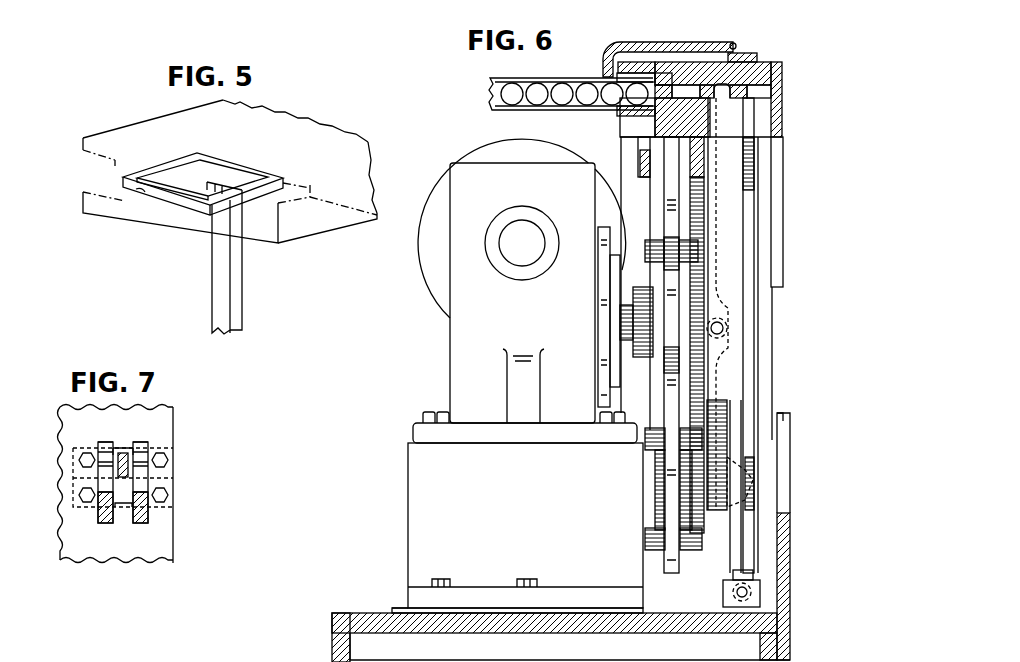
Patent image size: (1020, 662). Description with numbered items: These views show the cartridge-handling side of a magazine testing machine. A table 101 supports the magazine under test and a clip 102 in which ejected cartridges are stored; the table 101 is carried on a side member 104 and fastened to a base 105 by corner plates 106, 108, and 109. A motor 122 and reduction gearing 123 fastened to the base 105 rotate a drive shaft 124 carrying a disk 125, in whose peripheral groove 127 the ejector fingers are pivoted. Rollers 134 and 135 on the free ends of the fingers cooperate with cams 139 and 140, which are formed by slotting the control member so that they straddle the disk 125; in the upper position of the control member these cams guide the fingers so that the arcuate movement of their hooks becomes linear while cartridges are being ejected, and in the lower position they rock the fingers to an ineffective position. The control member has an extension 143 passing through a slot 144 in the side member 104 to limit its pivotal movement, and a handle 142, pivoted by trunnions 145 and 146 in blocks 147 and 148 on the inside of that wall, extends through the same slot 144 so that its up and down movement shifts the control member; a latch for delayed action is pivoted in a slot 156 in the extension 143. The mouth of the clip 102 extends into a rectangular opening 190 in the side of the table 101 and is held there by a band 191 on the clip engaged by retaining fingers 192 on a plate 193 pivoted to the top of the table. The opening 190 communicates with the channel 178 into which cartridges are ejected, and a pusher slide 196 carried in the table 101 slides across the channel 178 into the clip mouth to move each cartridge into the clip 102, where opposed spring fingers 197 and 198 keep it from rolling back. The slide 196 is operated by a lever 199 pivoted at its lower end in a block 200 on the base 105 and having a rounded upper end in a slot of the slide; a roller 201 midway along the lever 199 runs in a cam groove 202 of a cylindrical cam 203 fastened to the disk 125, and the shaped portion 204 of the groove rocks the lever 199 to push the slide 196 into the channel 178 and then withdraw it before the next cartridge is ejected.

In FIG. 5, the table 101 is at (317, 233).
In FIG. 6, the table 101 is at (787, 547).
In FIG. 6, the clip 102 is at (523, 108).
In FIG. 7, the side member 104 is at (163, 553).
In FIG. 6, the base 105 is at (382, 617).
In FIG. 6, the corner plate 106 is at (777, 103).
In FIG. 6, the corner plate 108 is at (778, 177).
In FIG. 6, the corner plate 109 is at (778, 397).
In FIG. 6, the motor 122 is at (485, 150).
In FIG. 6, the reduction gearing 123 is at (445, 327).
In FIG. 6, the drive shaft 124 is at (623, 312).
In FIG. 6, the disk 125 is at (673, 390).
In FIG. 6, the peripheral groove 127 is at (667, 218).
In FIG. 6, the roller 134 is at (688, 547).
In FIG. 6, the roller 135 is at (648, 537).
In FIG. 6, the cam 139 is at (700, 133).
In FIG. 6, the cam 140 is at (641, 173).
In FIG. 7, the handle 142 is at (100, 517).
In FIG. 7, the extension 143 is at (147, 448).
In FIG. 7, the slot 144 is at (127, 505).
In FIG. 7, the trunnion 145 is at (73, 467).
In FIG. 7, the trunnion 146 is at (165, 467).
In FIG. 7, the block 147 is at (80, 507).
In FIG. 7, the block 148 is at (167, 507).
In FIG. 7, the slot 156 is at (127, 453).
In FIG. 5, the channel 178 is at (140, 193).
In FIG. 6, the channel 178 is at (660, 117).
In FIG. 5, the rectangular opening 190 is at (97, 187).
In FIG. 6, the rectangular opening 190 is at (677, 87).
In FIG. 6, the band 191 is at (633, 68).
In FIG. 6, the retaining fingers 192 is at (607, 77).
In FIG. 6, the plate 193 is at (630, 32).
In FIG. 5, the pusher slide 196 is at (190, 197).
In FIG. 6, the pusher slide 196 is at (762, 63).
In FIG. 6, the spring finger 197 is at (623, 120).
In FIG. 6, the spring finger 198 is at (660, 77).
In FIG. 5, the lever 199 is at (227, 278).
In FIG. 6, the lever 199 is at (732, 557).
In FIG. 6, the block 200 is at (723, 597).
In FIG. 6, the roller 201 is at (728, 330).
In FIG. 6, the cam groove 202 is at (743, 297).
In FIG. 6, the cylindrical cam 203 is at (752, 360).
In FIG. 6, the shaped portion of cam groove 204 is at (707, 493).